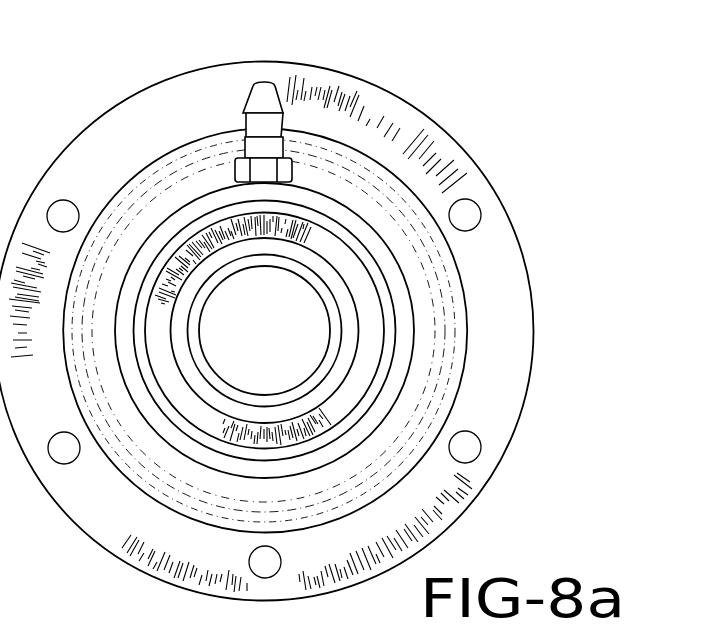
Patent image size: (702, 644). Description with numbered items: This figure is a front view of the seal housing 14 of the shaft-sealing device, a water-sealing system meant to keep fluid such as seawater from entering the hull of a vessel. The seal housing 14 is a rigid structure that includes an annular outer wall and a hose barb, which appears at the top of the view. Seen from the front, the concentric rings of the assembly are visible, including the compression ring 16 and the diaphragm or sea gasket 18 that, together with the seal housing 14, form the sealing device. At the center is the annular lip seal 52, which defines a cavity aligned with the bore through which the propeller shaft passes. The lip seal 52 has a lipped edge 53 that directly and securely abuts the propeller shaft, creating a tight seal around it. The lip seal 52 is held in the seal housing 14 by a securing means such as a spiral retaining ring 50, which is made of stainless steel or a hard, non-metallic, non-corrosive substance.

The seal housing 14 is at (354, 207).
The compression ring 16 is at (105, 105).
The diaphragm or sea gasket 18 is at (455, 367).
The spiral retaining ring 50 is at (158, 322).
The lip seal 52 is at (215, 278).
The lipped edge 53 is at (313, 375).